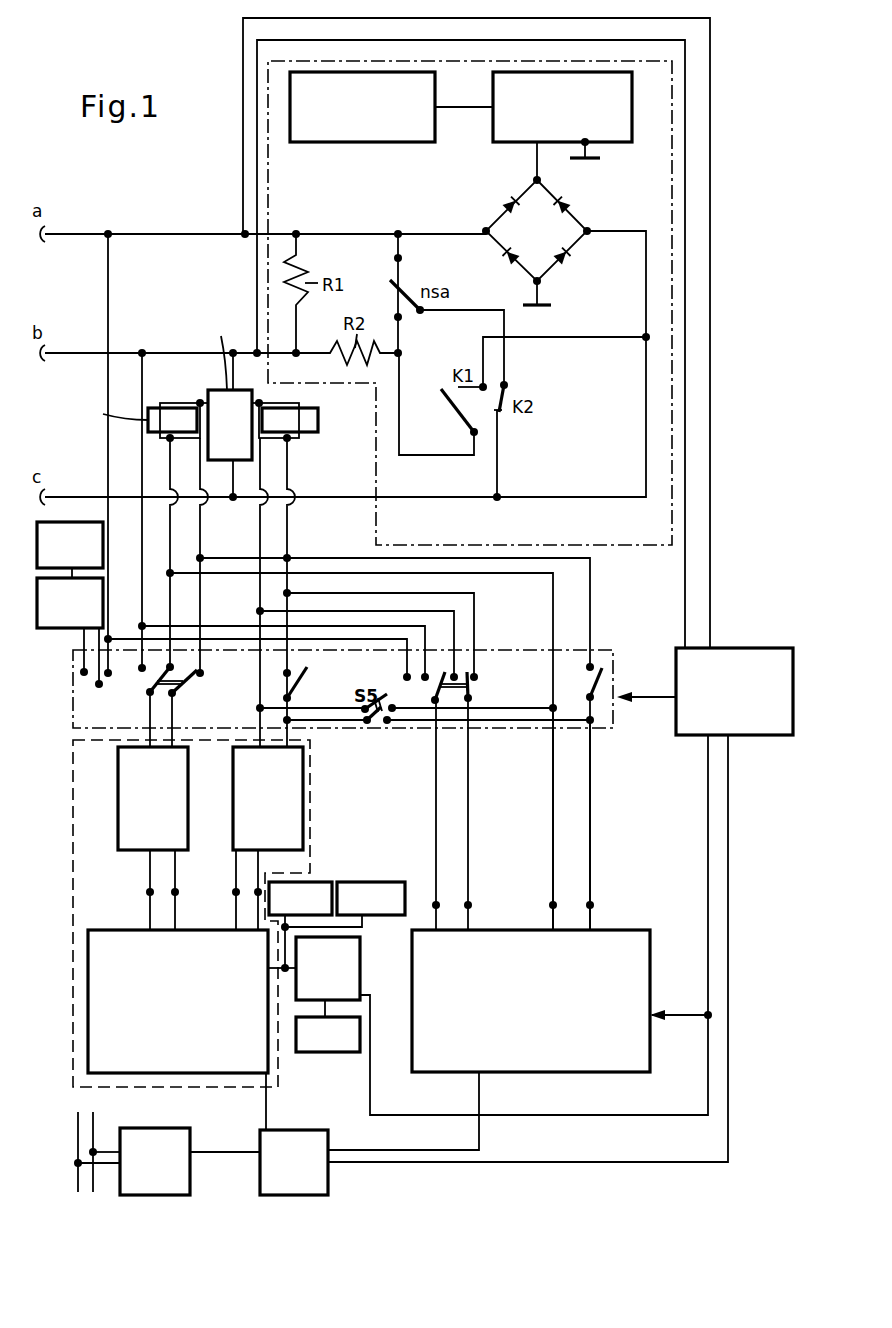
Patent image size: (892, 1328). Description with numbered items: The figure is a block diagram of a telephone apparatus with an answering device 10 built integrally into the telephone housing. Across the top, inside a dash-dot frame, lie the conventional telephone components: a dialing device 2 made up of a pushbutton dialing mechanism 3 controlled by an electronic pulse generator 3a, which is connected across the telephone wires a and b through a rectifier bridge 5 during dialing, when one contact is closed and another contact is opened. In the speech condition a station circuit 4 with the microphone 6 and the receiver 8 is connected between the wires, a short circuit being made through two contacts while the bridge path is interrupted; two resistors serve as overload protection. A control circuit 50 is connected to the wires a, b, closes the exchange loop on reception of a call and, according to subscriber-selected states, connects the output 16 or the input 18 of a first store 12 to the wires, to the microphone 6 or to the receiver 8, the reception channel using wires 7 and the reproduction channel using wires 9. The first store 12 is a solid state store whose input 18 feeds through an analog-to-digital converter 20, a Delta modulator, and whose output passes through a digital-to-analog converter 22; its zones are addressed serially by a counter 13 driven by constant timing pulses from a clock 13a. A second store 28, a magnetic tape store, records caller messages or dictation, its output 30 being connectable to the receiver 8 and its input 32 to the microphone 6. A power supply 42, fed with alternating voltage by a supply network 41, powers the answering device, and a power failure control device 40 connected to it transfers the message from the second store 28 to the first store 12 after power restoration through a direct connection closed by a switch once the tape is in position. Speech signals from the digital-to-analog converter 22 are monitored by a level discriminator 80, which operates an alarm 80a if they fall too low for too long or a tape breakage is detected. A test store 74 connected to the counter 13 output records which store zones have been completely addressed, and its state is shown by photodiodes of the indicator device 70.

The dialing device 2 is at (465, 62).
The pushbutton dialing mechanism 3 is at (505, 143).
The electronic pulse generator 3a is at (362, 142).
The station circuit 4 is at (216, 389).
The rectifier bridge 5 is at (567, 206).
The microphone 6 is at (318, 418).
The wires 7 is at (278, 551).
The receiver 8 is at (160, 406).
The wires 9 is at (190, 551).
The answering device 10 is at (734, 785).
The first store 12 is at (105, 930).
The counter 13 is at (360, 986).
The clock 13a is at (321, 1053).
The output of the first store 16 is at (162, 811).
The input of the first store 18 is at (247, 890).
The analog-to-digital converter 20 is at (303, 822).
The digital-to-analog converter 22 is at (118, 813).
The second store 28 is at (585, 1072).
The output of the second store 30 is at (571, 819).
The input of the second store 32 is at (452, 814).
The power failure control device 40 is at (328, 1178).
The supply network 41 is at (96, 1143).
The power supply 42 is at (165, 1128).
The control circuit 50 is at (738, 648).
The indicator device 70 is at (331, 872).
The test store 74 is at (387, 912).
The level discriminator 80 is at (56, 628).
The alarm 80a is at (46, 524).